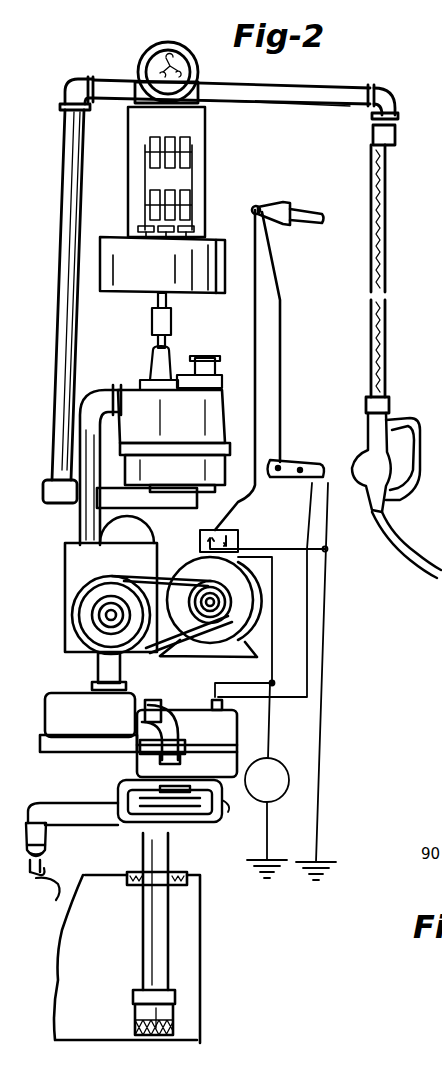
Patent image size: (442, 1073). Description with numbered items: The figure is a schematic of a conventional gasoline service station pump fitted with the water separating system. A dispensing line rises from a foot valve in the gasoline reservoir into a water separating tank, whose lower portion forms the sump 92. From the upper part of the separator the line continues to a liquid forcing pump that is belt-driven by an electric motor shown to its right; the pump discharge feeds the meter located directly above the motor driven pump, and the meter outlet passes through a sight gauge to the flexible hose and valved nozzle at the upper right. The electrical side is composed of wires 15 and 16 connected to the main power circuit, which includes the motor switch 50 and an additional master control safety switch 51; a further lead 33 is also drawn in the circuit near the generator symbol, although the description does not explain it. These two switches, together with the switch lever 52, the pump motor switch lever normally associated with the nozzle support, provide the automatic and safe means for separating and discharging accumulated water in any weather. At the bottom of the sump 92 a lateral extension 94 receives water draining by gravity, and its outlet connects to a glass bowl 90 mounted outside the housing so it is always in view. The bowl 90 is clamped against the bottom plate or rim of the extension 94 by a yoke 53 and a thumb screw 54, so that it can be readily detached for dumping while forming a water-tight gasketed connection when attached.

The wire 15 is at (236, 682).
The wire 16 is at (271, 698).
The generator lead 33 is at (228, 808).
The motor switch 50 is at (238, 531).
The safety switch 51 is at (312, 500).
The switch lever 52 is at (310, 228).
The yoke 53 is at (63, 852).
The thumb screw 54 is at (58, 894).
The glass bowl 90 is at (36, 876).
The sump 92 is at (186, 826).
The lateral extension 94 is at (88, 827).